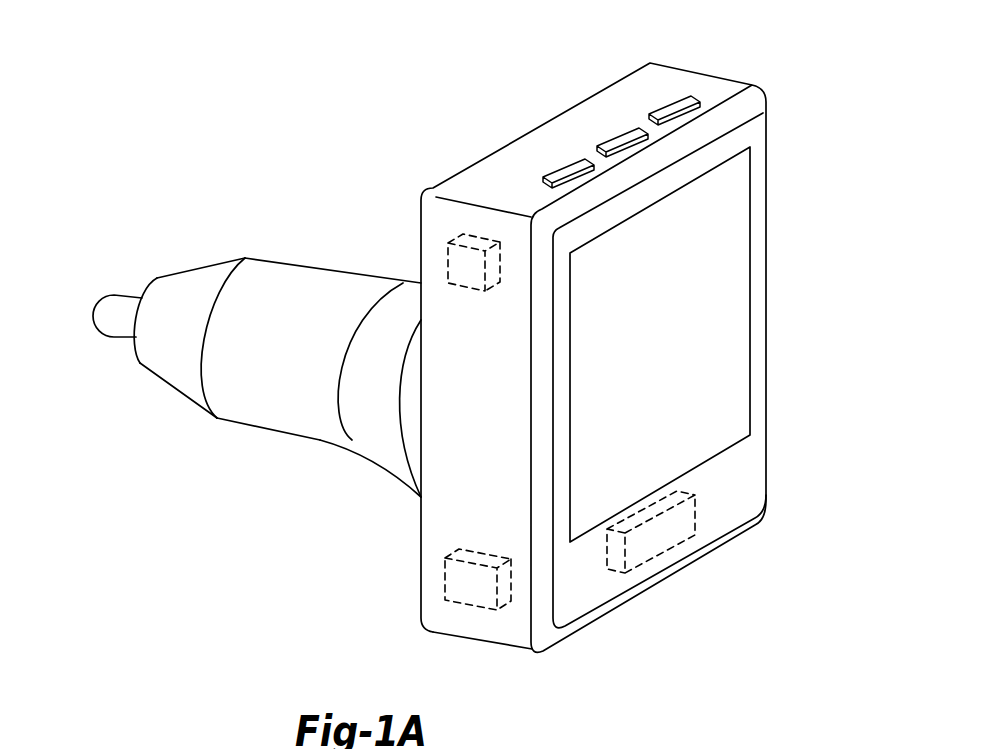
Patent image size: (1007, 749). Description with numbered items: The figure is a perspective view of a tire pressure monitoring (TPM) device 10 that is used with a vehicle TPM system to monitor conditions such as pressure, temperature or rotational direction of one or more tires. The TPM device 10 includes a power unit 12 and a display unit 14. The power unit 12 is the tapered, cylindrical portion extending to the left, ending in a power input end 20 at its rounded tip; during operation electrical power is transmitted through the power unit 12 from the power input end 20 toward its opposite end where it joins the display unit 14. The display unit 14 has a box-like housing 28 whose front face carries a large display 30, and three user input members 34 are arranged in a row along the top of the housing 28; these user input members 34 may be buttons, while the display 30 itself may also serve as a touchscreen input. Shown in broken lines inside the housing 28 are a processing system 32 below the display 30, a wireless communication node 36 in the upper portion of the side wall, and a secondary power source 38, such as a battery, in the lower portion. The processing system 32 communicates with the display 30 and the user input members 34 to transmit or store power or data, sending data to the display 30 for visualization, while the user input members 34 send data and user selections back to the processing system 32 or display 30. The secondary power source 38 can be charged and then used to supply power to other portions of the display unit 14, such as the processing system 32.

The tire pressure monitoring device 10 is at (806, 87).
The power unit 12 is at (287, 290).
The display unit 14 is at (702, 132).
The power input end 20 is at (112, 307).
The housing 28 is at (453, 505).
The display 30 is at (703, 303).
The processing system 32 is at (660, 540).
The user input member 34 is at (572, 160).
The wireless communication node 36 is at (470, 262).
The secondary power source 38 is at (467, 578).